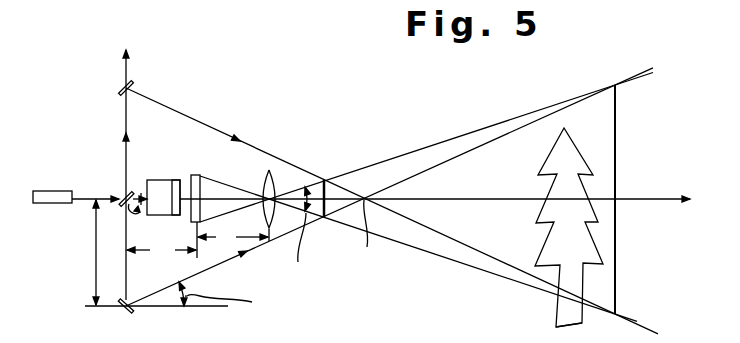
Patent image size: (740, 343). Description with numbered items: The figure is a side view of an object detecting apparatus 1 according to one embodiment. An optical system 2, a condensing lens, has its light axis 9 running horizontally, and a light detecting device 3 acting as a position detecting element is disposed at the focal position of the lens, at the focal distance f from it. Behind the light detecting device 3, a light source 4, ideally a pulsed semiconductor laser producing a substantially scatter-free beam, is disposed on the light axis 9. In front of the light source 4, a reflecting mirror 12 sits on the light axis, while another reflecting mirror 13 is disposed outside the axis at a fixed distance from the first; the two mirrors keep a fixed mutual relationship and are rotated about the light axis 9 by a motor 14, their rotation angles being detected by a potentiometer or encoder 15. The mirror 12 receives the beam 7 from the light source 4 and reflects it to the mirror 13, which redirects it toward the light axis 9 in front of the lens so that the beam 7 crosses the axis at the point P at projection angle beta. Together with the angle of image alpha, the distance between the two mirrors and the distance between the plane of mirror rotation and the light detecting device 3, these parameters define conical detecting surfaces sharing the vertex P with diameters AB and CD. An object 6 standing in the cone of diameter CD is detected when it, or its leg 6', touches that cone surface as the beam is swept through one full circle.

The object detecting apparatus 1 is at (313, 128).
The optical system 2 is at (267, 170).
The light detecting device 3 is at (199, 175).
The light source 4 is at (48, 190).
The object 6 is at (553, 227).
The leg 6' is at (536, 319).
The beam 7 is at (234, 136).
The light axis 9 is at (450, 200).
The reflecting mirror 12 is at (118, 190).
The reflecting mirror 13 is at (118, 90).
The motor 14 is at (158, 179).
The potentiometer or encoder 15 is at (176, 178).